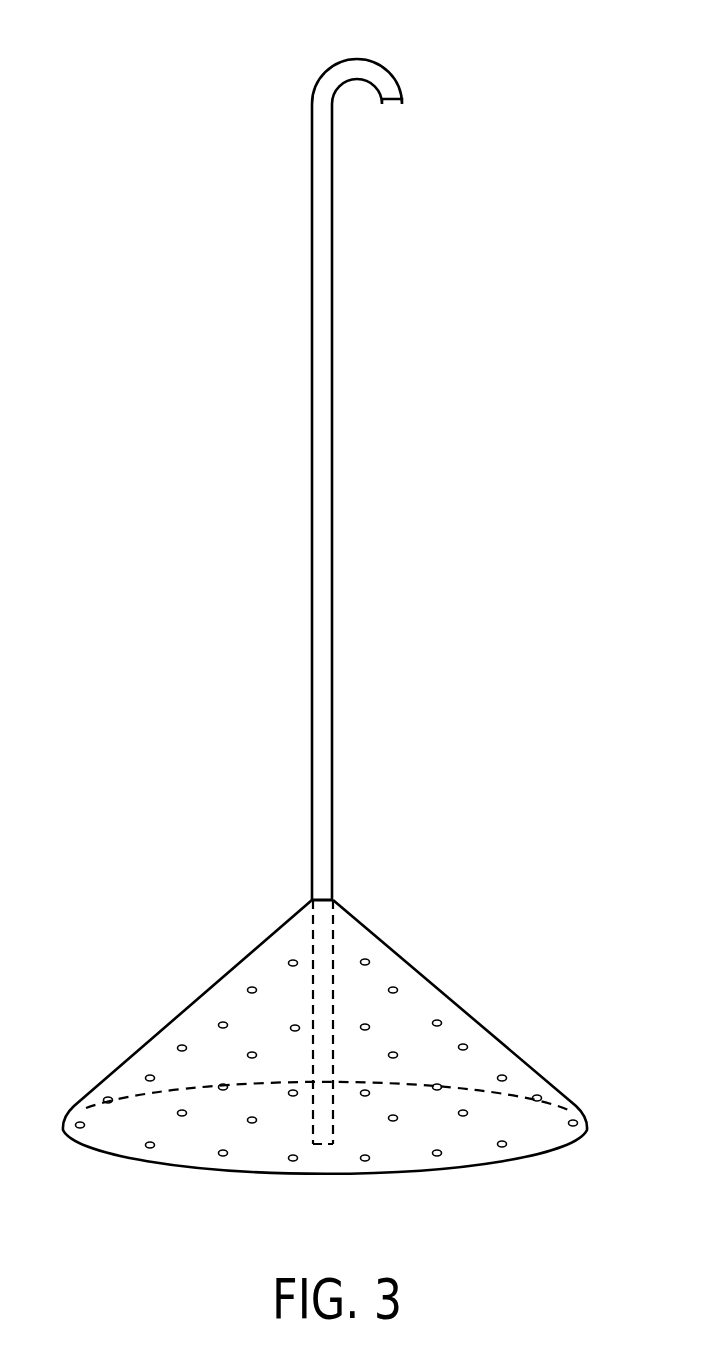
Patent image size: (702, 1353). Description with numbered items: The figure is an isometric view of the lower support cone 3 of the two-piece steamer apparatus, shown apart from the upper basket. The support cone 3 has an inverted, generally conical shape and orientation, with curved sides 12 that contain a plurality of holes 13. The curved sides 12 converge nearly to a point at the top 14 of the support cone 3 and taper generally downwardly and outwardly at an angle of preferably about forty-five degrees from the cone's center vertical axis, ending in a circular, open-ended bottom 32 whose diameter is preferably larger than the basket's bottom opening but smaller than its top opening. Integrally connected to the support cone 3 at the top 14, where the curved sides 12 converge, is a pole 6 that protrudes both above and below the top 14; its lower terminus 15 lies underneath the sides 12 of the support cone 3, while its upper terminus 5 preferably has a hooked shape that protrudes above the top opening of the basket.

The support cone 3 is at (329, 1029).
The upper terminus 5 is at (312, 66).
The pole 6 is at (340, 476).
The curved sides 12 is at (176, 1077).
The holes 13 is at (462, 1098).
The top 14 is at (303, 894).
The lower terminus 15 is at (308, 1156).
The open-ended bottom 32 is at (348, 1156).